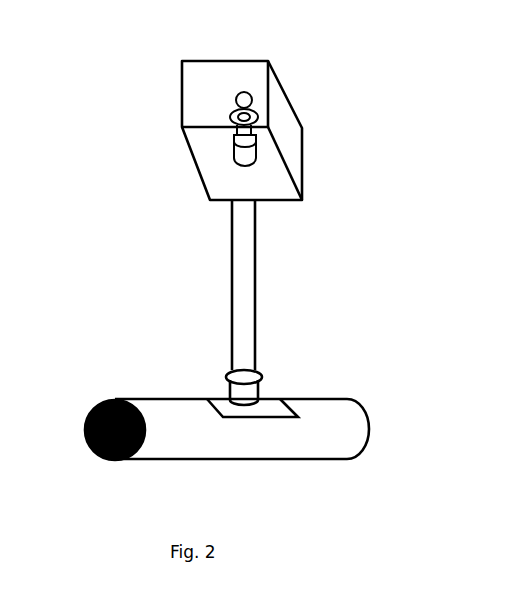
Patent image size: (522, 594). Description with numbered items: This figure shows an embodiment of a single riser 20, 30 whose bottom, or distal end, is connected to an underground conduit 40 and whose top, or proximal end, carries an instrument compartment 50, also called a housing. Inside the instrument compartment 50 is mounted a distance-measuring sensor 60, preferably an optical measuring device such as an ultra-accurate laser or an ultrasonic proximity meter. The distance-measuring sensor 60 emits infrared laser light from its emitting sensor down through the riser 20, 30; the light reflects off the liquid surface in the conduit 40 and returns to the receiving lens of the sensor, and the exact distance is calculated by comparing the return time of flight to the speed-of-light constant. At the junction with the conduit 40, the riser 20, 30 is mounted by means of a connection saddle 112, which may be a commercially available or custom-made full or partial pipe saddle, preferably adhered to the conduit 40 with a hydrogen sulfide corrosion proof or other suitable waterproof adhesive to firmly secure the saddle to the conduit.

The first riser 20 is at (172, 302).
The second riser 30 is at (243, 278).
The underground conduit 40 is at (330, 438).
The instrument compartment 50 is at (287, 120).
The distance-measuring sensor 60 is at (230, 117).
The connection saddle 112 is at (208, 400).